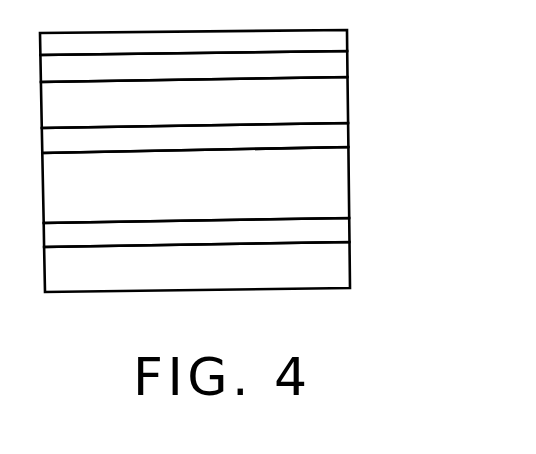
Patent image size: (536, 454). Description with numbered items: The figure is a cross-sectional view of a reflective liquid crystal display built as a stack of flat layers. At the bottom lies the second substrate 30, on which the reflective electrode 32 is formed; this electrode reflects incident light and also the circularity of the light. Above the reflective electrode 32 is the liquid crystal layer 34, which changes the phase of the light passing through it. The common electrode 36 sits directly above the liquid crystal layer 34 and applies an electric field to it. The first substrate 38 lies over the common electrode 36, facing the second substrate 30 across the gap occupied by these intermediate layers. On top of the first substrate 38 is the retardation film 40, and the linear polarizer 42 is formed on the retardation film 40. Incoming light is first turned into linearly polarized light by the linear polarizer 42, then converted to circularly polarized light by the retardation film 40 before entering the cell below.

The second substrate 30 is at (350, 265).
The reflective electrode 32 is at (350, 228).
The liquid crystal layer 34 is at (348, 182).
The common electrode 36 is at (347, 135).
The first substrate 38 is at (347, 98).
The retardation film 40 is at (347, 62).
The linear polarizer 42 is at (347, 35).